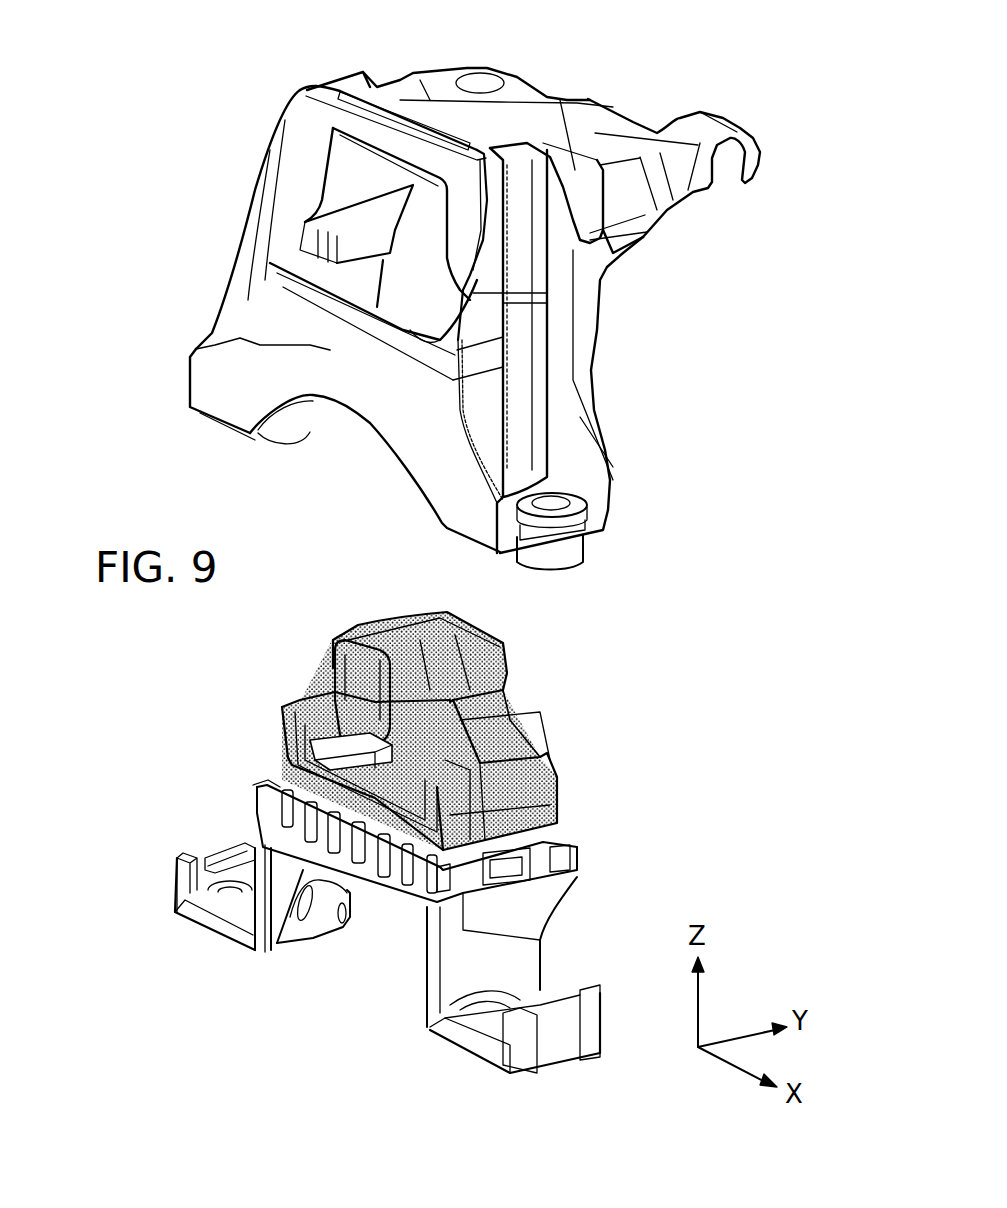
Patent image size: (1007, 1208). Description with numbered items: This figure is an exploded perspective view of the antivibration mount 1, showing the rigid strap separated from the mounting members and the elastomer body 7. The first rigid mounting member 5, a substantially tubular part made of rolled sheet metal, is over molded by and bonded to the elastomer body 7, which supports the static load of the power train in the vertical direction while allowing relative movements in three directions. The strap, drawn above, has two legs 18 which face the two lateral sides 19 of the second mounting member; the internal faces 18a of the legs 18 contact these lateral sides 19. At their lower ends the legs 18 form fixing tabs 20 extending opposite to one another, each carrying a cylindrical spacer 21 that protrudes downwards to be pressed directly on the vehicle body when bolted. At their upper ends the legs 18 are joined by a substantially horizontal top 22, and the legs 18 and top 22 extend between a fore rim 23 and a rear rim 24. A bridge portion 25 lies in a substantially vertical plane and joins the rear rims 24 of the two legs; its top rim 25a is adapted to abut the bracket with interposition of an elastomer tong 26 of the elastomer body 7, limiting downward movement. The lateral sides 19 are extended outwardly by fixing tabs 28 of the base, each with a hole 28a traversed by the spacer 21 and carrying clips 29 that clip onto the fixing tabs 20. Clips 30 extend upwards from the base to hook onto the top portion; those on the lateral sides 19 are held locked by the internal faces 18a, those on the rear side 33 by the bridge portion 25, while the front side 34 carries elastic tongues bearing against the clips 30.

The antivibration mount 1 is at (725, 558).
The first rigid mounting member 5 is at (337, 652).
The elastomer body 7 is at (493, 727).
The legs 18 is at (280, 213).
The internal faces 18a is at (345, 275).
The lateral sides 19 is at (537, 888).
The fixing tabs 20 is at (593, 497).
The cylindrical spacer 21 is at (297, 432).
The top 22 is at (492, 117).
The fore rim 23 is at (543, 90).
The rear rim 24 is at (293, 105).
The bridge portion 25 is at (310, 325).
The top rim 25a is at (398, 330).
The elastomer tong 26 is at (313, 707).
The fixing tabs 28 is at (203, 917).
The hole 28a is at (237, 893).
The clips 29 is at (228, 850).
The clips 30 is at (543, 860).
The rear side 33 is at (323, 873).
The front side 34 is at (580, 837).